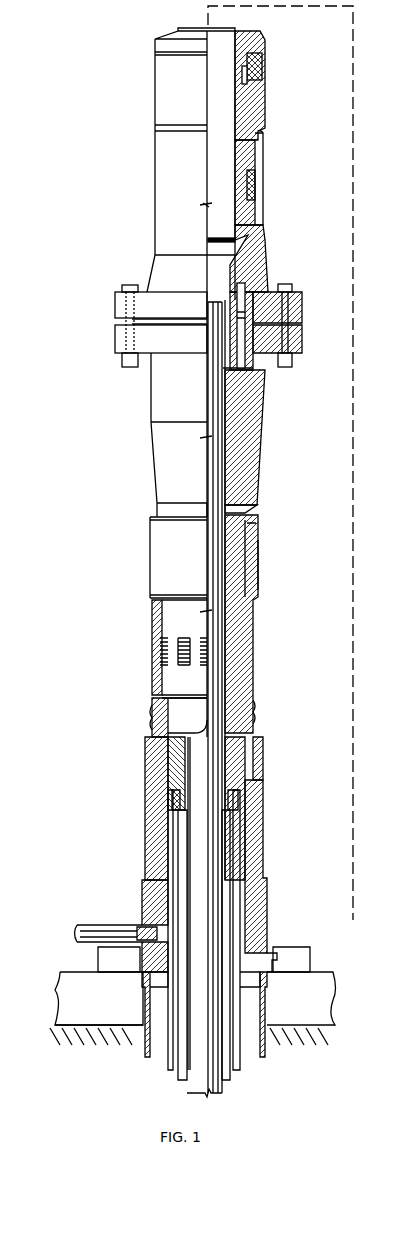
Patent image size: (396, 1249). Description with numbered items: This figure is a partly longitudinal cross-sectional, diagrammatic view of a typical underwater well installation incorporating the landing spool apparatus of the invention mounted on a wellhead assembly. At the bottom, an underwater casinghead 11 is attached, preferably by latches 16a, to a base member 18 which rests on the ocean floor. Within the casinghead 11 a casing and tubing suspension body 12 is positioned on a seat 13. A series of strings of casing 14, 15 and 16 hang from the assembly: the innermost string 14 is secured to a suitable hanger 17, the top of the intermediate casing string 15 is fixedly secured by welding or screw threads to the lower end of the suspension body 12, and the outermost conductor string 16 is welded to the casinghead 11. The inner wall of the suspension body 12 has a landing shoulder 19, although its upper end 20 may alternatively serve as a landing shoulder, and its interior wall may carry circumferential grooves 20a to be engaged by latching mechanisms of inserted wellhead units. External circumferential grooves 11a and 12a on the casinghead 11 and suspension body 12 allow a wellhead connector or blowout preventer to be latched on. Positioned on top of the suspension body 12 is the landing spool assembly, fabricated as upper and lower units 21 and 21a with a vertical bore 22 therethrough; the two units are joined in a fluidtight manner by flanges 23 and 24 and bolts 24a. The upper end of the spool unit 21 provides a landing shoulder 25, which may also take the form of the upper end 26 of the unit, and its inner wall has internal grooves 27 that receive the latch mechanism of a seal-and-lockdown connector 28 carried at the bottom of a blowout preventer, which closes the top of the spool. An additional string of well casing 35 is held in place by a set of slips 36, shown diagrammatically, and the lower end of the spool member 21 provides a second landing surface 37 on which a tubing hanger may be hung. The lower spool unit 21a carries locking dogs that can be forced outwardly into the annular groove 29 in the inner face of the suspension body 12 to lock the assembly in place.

The underwater casinghead 11 is at (263, 860).
The external circumferential groove 11a is at (258, 778).
The casing and tubing suspension body 12 is at (254, 715).
The external circumferential groove 12a is at (152, 718).
The seat 13 is at (258, 832).
The innermost casing string 14 is at (180, 1078).
The intermediate casing string 15 is at (168, 1060).
The conductor string 16 is at (137, 1045).
The latches 16a is at (270, 958).
The hanger 17 is at (173, 858).
The base member 18 is at (70, 990).
The landing shoulder 19 is at (155, 699).
The upper end of suspension body 20 is at (160, 595).
The internal circumferential grooves 20a is at (163, 660).
The upper landing spool assembly unit 21 is at (163, 213).
The lower landing spool assembly unit 21a is at (153, 400).
The vertical bore 22 is at (220, 263).
The flange 23 is at (115, 300).
The flange 24 is at (115, 342).
The bolts 24a is at (126, 285).
The landing shoulder 25 is at (250, 236).
The upper end of spool unit 26 is at (263, 134).
The internal grooves 27 is at (255, 178).
The seal-and-lockdown connector 28 is at (258, 97).
The annular groove 29 is at (160, 648).
The additional casing string 35 is at (213, 928).
The slips 36 is at (250, 425).
The second landing surface 37 is at (228, 313).